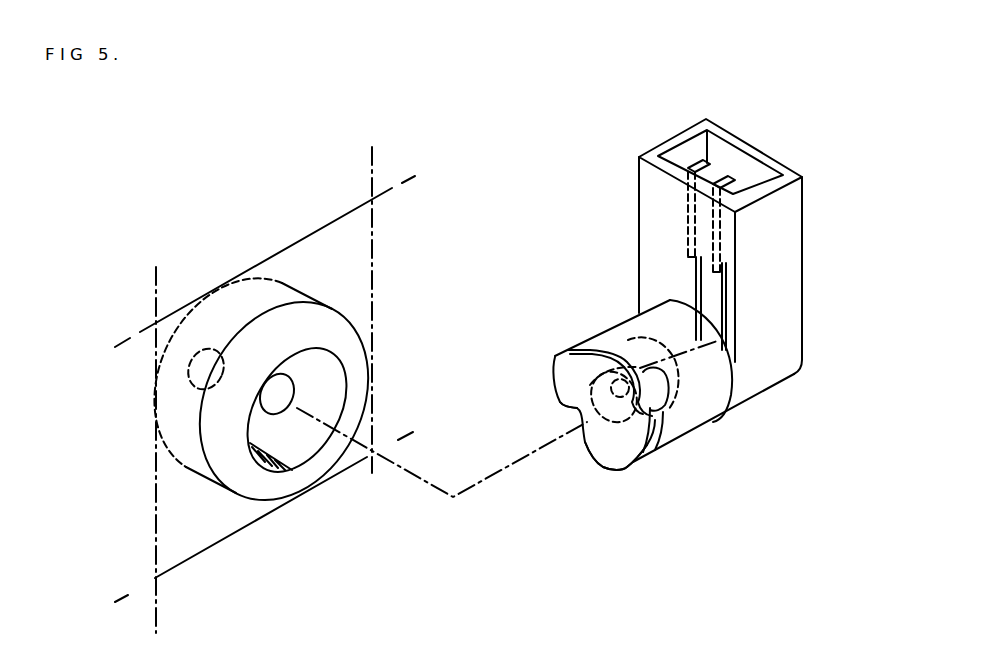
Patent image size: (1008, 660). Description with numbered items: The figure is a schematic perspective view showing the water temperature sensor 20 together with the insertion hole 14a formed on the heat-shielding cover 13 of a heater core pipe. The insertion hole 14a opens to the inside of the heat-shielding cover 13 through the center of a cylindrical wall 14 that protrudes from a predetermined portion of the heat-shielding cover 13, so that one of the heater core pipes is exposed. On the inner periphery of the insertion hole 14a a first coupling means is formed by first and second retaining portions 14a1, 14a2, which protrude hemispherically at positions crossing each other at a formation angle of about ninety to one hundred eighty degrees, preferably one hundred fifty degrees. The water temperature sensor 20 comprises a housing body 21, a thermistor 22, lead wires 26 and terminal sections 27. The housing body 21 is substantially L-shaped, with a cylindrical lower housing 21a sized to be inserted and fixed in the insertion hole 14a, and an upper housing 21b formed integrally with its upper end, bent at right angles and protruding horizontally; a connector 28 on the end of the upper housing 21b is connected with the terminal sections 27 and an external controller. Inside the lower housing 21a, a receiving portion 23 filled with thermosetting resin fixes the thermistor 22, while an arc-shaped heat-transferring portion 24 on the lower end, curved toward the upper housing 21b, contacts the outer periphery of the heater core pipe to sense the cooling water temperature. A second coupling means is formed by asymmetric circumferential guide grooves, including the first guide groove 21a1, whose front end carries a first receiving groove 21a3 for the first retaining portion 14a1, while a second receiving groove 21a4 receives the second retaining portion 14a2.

The heat-shielding cover 13 is at (313, 254).
The cylindrical wall 14 is at (220, 467).
The insertion hole 14a is at (303, 442).
The first retaining portion 14a1 is at (217, 360).
The second retaining portion 14a2 is at (284, 386).
The water temperature sensor 20 is at (817, 227).
The housing body 21 is at (848, 415).
The lower housing 21a is at (713, 404).
The first guide groove 21a1 is at (683, 427).
The first receiving groove 21a3 is at (652, 448).
The second receiving groove 21a4 is at (588, 425).
The upper housing 21b is at (762, 367).
The thermistor 22 is at (633, 353).
The receiving portion 23 is at (584, 352).
The heat-transferring portion 24 is at (605, 448).
The lead wires 26 is at (722, 302).
The terminal sections 27 is at (735, 182).
The connector 28 is at (679, 155).